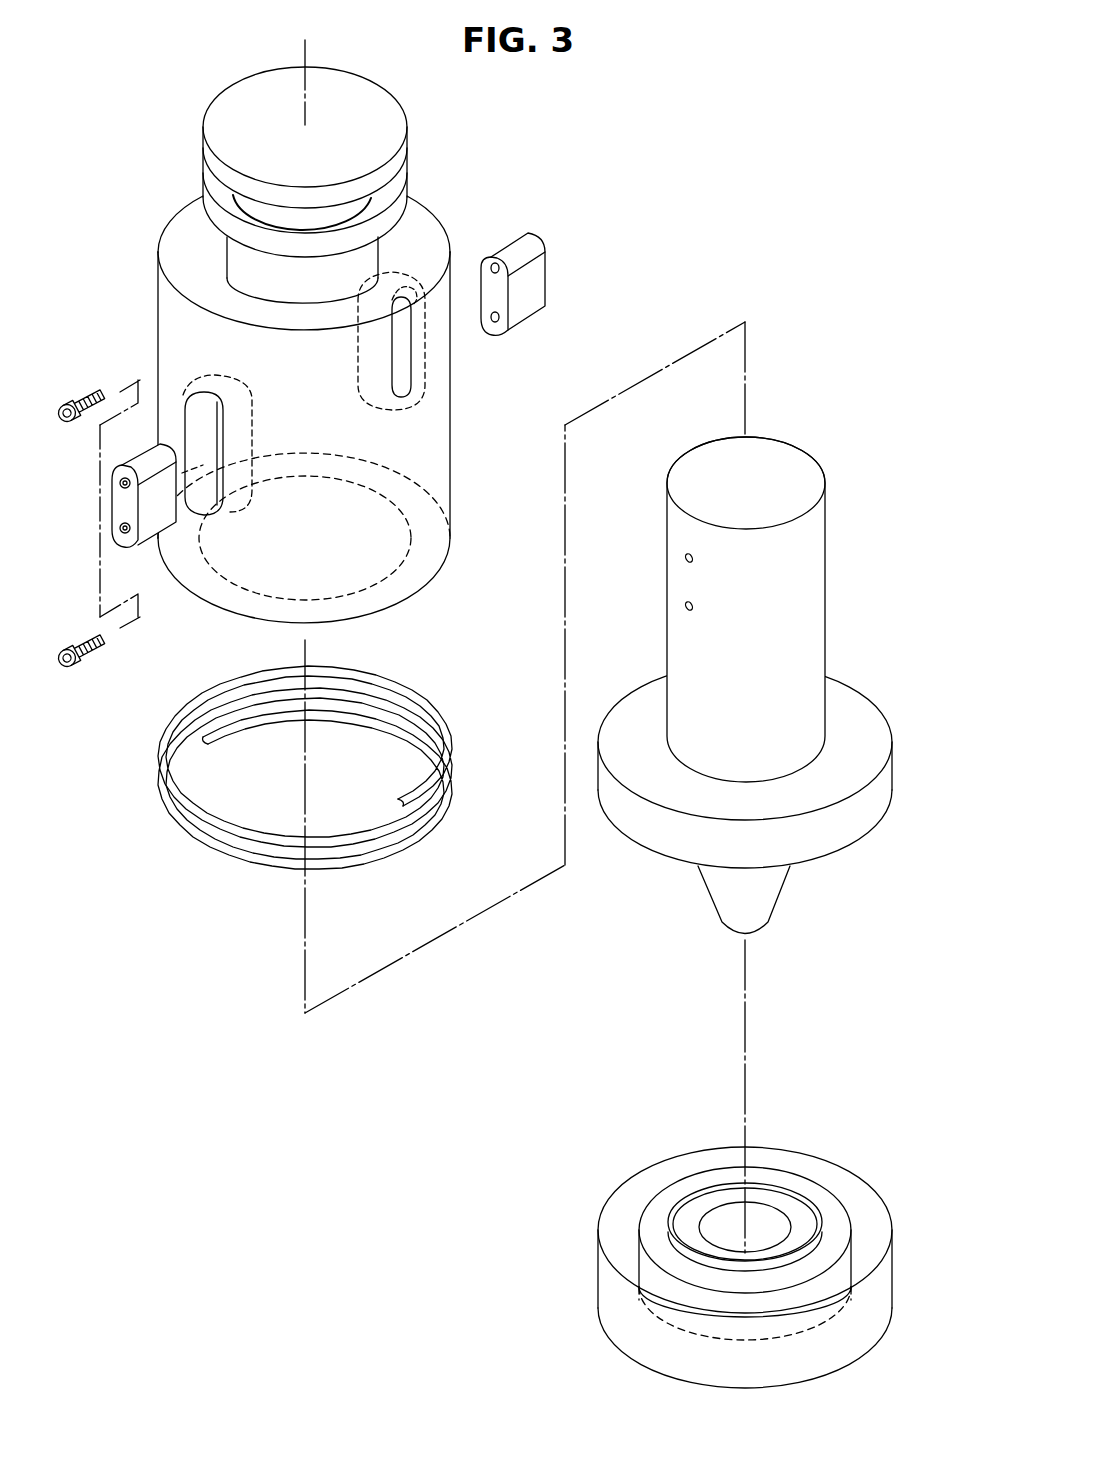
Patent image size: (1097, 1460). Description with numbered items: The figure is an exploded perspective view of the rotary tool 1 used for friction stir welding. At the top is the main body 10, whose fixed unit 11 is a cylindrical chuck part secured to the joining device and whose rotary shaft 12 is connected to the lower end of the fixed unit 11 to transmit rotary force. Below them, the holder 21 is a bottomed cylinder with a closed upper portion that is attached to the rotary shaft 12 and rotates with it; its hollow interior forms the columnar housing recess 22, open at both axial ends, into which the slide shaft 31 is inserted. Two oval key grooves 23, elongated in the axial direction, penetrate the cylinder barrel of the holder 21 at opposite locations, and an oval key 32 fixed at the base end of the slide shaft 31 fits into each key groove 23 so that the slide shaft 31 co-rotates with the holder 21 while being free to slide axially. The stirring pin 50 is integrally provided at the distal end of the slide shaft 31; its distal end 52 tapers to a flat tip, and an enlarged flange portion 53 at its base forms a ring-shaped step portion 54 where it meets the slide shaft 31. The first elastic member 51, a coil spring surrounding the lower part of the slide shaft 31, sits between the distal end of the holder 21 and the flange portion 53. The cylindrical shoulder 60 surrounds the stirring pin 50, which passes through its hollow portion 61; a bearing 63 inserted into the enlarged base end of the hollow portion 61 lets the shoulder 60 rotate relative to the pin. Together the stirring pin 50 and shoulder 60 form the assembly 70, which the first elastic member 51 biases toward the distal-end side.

The rotary tool 1 is at (868, 113).
The main body 10 is at (162, 157).
The fixed unit 11 is at (295, 220).
The rotary shaft 12 is at (303, 273).
The holder 21 is at (192, 222).
The housing recess 22 is at (401, 430).
The key groove 23 is at (187, 380).
The slide shaft 31 is at (800, 563).
The key 32 is at (525, 288).
The stirring pin 50 is at (762, 915).
The first elastic member 51 is at (193, 830).
The distal end 52 is at (772, 887).
The flange portion 53 is at (883, 777).
The step portion 54 is at (855, 700).
The shoulder 60 is at (806, 1167).
The hollow portion 61 is at (670, 1288).
The bearing 63 is at (662, 1205).
The assembly 70 is at (852, 990).